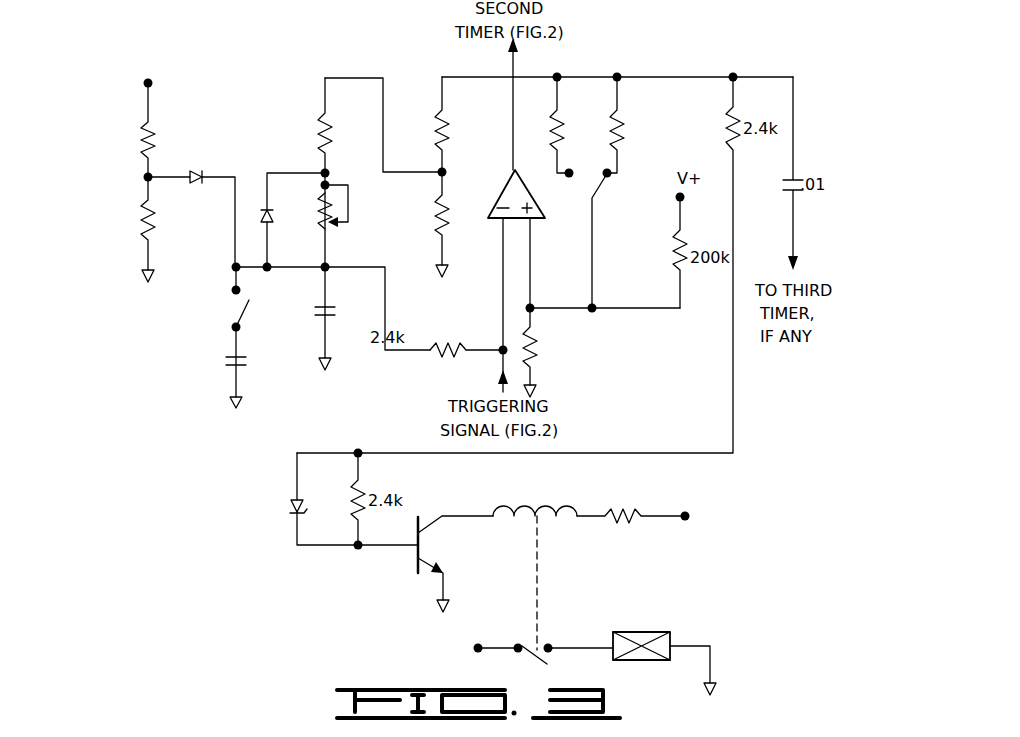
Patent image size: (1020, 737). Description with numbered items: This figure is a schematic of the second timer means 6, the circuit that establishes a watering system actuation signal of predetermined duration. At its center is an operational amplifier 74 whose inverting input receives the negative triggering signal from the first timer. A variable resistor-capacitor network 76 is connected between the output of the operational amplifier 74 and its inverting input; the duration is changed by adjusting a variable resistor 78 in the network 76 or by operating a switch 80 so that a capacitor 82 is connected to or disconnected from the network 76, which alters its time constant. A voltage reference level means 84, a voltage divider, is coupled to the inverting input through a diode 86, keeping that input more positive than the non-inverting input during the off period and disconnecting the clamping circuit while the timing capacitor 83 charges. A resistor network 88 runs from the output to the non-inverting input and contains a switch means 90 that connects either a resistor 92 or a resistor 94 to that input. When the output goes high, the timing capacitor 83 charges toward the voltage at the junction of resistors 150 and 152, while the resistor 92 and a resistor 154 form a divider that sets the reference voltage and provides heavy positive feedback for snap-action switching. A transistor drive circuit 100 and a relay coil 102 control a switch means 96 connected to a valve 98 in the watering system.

The second timer means 6 is at (436, 50).
The operational amplifier 74 is at (508, 188).
The variable resistor-capacitor network 76 is at (300, 148).
The variable resistor 78 is at (324, 210).
The switch 80 is at (240, 317).
The capacitor 82 is at (230, 356).
The timing capacitor 83 is at (328, 321).
The voltage reference level means 84 is at (136, 186).
The diode 86 is at (193, 170).
The resistor network 88 is at (620, 324).
The switch means 90 is at (605, 188).
The resistor 92 is at (625, 131).
The resistor 94 is at (565, 134).
The switch means 96 is at (540, 642).
The valve 98 is at (650, 633).
The transistor drive circuit 100 is at (407, 516).
The relay coil 102 is at (540, 512).
The resistor 150 is at (440, 126).
The resistor 152 is at (440, 218).
The resistor 154 is at (540, 362).